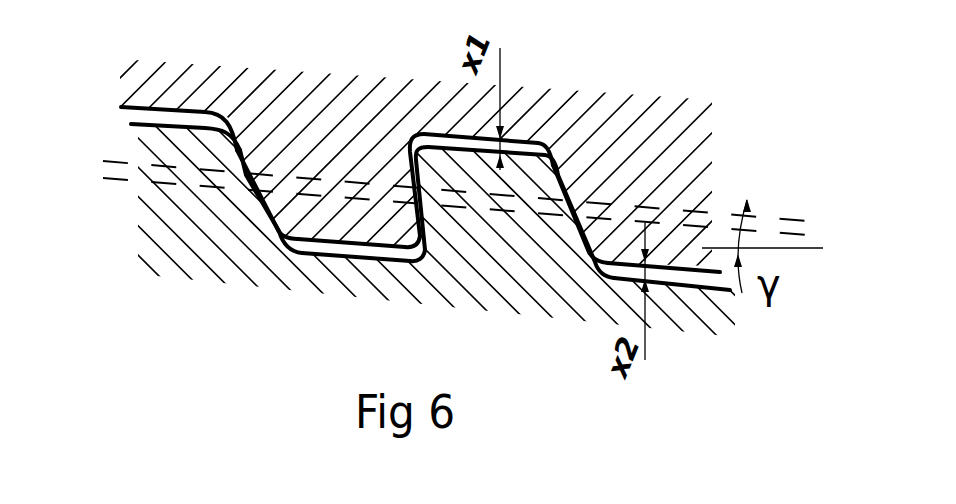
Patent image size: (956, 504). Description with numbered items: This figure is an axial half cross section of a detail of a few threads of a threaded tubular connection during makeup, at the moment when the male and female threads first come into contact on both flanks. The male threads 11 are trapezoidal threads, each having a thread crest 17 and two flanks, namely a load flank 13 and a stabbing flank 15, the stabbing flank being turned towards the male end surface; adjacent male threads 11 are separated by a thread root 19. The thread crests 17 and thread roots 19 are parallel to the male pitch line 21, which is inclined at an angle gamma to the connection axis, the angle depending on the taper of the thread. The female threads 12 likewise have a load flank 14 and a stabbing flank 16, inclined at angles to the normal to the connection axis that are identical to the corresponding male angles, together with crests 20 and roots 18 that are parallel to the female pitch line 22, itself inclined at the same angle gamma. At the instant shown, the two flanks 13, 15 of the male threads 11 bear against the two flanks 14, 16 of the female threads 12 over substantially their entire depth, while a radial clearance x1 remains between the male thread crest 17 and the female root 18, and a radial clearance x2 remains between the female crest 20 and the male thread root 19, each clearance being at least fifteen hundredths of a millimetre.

The male thread 11 is at (508, 228).
The female thread 12 is at (323, 147).
The load flank 13 is at (406, 165).
The load flank of the female thread 14 is at (424, 230).
The stabbing flank 15 is at (575, 217).
The stabbing flank of the female thread 16 is at (257, 206).
The thread crest 17 is at (200, 111).
The root of the female thread 18 is at (158, 111).
The thread root 19 is at (367, 252).
The crest of the female thread 20 is at (331, 245).
The male pitch line 21 is at (128, 180).
The female pitch line 22 is at (710, 207).